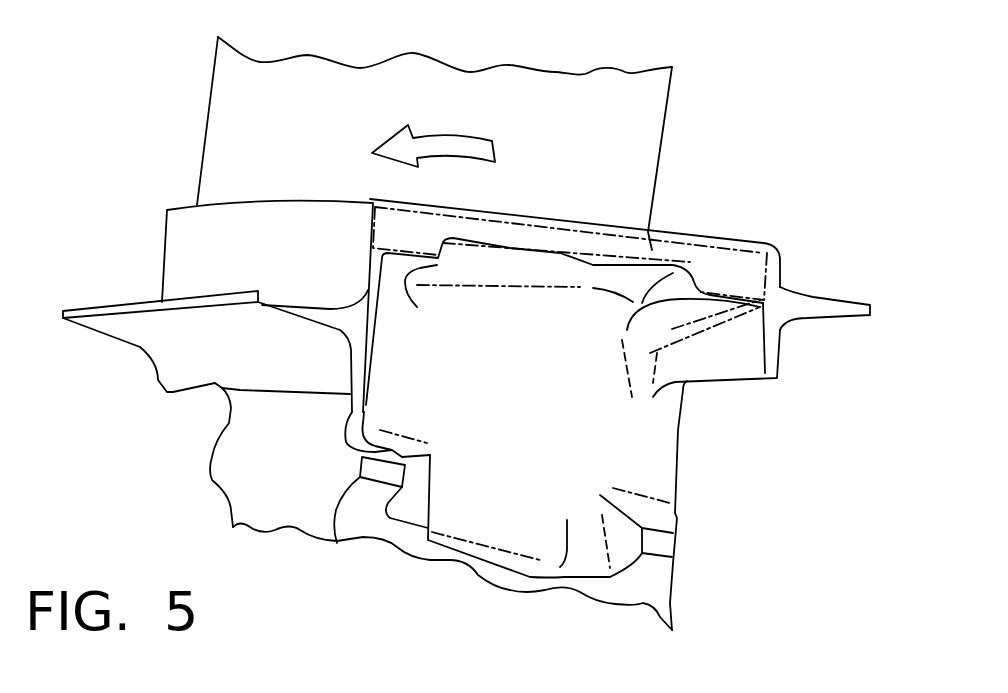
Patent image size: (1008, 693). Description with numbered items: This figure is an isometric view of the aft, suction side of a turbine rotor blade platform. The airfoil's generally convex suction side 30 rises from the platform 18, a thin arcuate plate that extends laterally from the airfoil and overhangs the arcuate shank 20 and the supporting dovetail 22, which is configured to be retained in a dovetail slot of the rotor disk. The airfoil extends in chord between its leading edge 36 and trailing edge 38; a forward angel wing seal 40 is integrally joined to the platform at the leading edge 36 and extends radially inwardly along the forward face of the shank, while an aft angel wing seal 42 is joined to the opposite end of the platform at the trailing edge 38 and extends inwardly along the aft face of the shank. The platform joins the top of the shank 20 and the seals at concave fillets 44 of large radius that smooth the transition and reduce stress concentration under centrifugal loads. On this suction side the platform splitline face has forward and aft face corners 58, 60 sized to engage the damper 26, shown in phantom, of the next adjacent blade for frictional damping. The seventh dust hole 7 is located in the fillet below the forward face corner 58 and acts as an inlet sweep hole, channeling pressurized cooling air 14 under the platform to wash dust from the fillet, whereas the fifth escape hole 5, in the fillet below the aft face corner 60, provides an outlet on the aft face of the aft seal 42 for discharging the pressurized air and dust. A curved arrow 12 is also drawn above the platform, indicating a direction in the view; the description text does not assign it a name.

The fifth escape hole 5 is at (327, 275).
The seventh dust hole 7 is at (637, 340).
The gas flow direction 12 is at (438, 137).
The pressurized cooling air 14 is at (600, 448).
The platform 18 is at (737, 240).
The shank 20 is at (227, 422).
The dovetail 22 is at (228, 523).
The damper 26 is at (657, 233).
The suction side 30 is at (290, 141).
The leading edge 36 is at (664, 130).
The trailing edge 38 is at (206, 125).
The forward angel wing seal 40 is at (833, 297).
The aft angel wing seal 42 is at (120, 300).
The fillets 44 is at (482, 272).
The forward face corner 58 is at (750, 281).
The aft face corner 60 is at (427, 243).